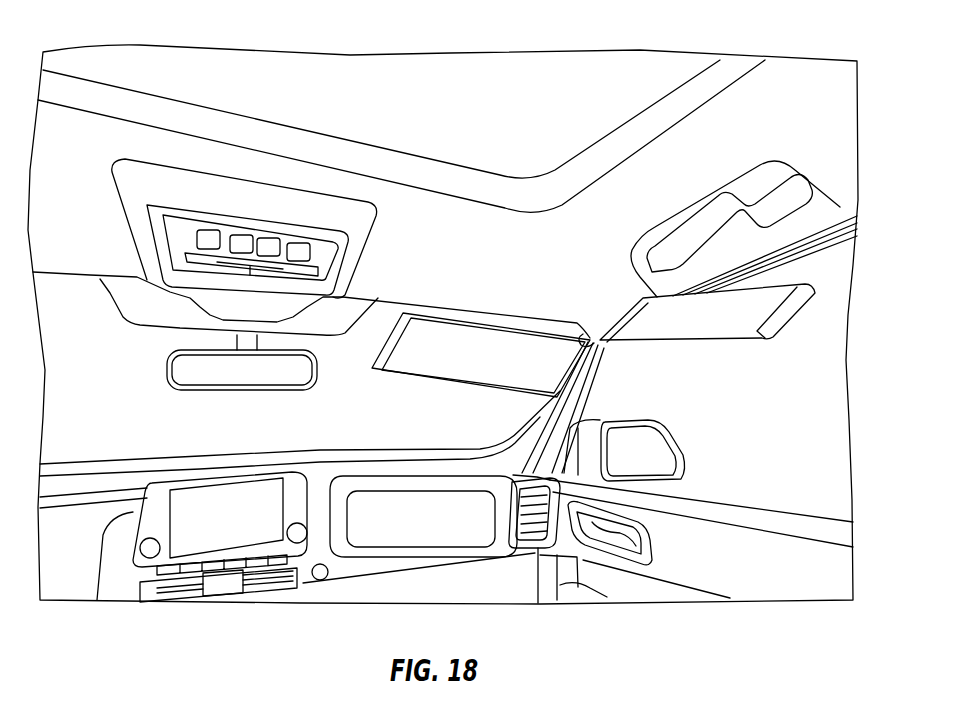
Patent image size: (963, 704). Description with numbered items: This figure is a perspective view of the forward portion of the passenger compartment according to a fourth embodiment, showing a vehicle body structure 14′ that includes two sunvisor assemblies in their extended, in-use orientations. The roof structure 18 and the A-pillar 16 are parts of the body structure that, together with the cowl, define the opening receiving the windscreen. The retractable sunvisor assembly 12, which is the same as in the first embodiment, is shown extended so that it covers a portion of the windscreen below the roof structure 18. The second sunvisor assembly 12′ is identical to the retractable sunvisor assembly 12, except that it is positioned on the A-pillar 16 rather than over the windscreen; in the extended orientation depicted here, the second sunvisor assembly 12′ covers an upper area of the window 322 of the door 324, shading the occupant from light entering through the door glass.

The roof structure 18 is at (637, 74).
The vehicle body structure 14′ is at (720, 59).
The retractable sunvisor assembly 12 is at (469, 383).
The second sunvisor assembly 12′ is at (713, 342).
The A-pillar 16 is at (594, 373).
The window 322 is at (840, 389).
The door 324 is at (766, 586).